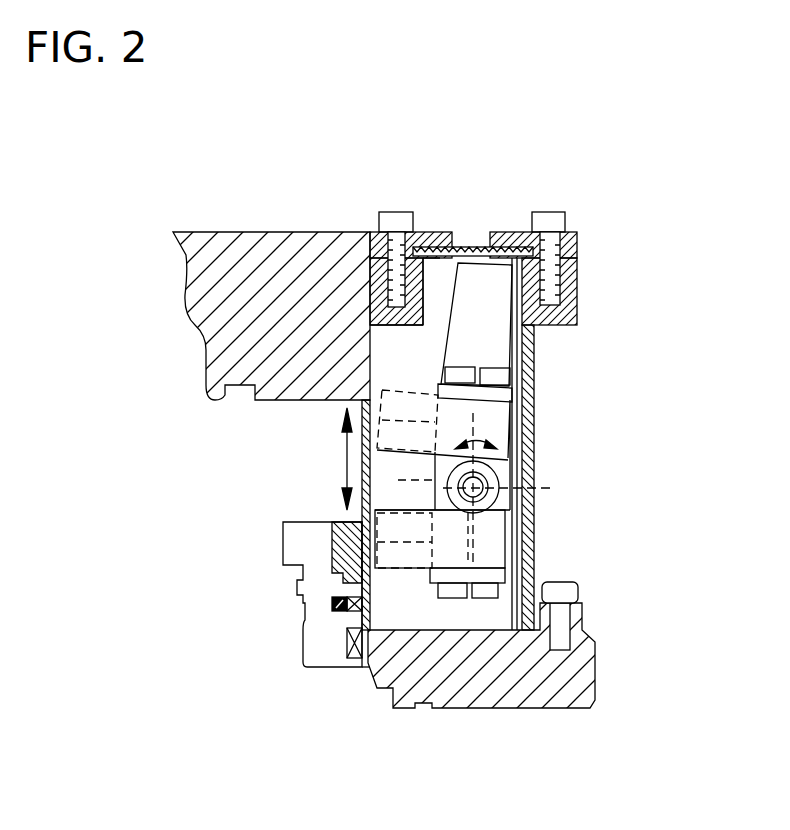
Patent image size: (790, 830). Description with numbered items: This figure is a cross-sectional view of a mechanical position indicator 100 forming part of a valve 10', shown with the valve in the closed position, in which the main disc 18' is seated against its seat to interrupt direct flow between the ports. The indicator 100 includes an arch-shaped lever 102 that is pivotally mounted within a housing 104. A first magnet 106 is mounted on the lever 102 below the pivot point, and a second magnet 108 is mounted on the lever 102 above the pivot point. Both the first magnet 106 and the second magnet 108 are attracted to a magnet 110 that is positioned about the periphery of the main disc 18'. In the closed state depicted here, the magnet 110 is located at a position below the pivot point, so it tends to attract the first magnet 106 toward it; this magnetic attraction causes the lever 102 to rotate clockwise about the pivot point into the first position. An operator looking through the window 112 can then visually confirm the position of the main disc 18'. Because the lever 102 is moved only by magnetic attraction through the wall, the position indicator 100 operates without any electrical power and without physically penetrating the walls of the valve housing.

The valve 10' is at (190, 316).
The main disc 18' is at (290, 594).
The mechanical position indicator 100 is at (550, 554).
The arch-shaped lever 102 is at (453, 280).
The housing 104 is at (535, 345).
The first magnet 106 is at (432, 542).
The second magnet 108 is at (435, 425).
The magnet 110 is at (328, 537).
The window 112 is at (444, 245).